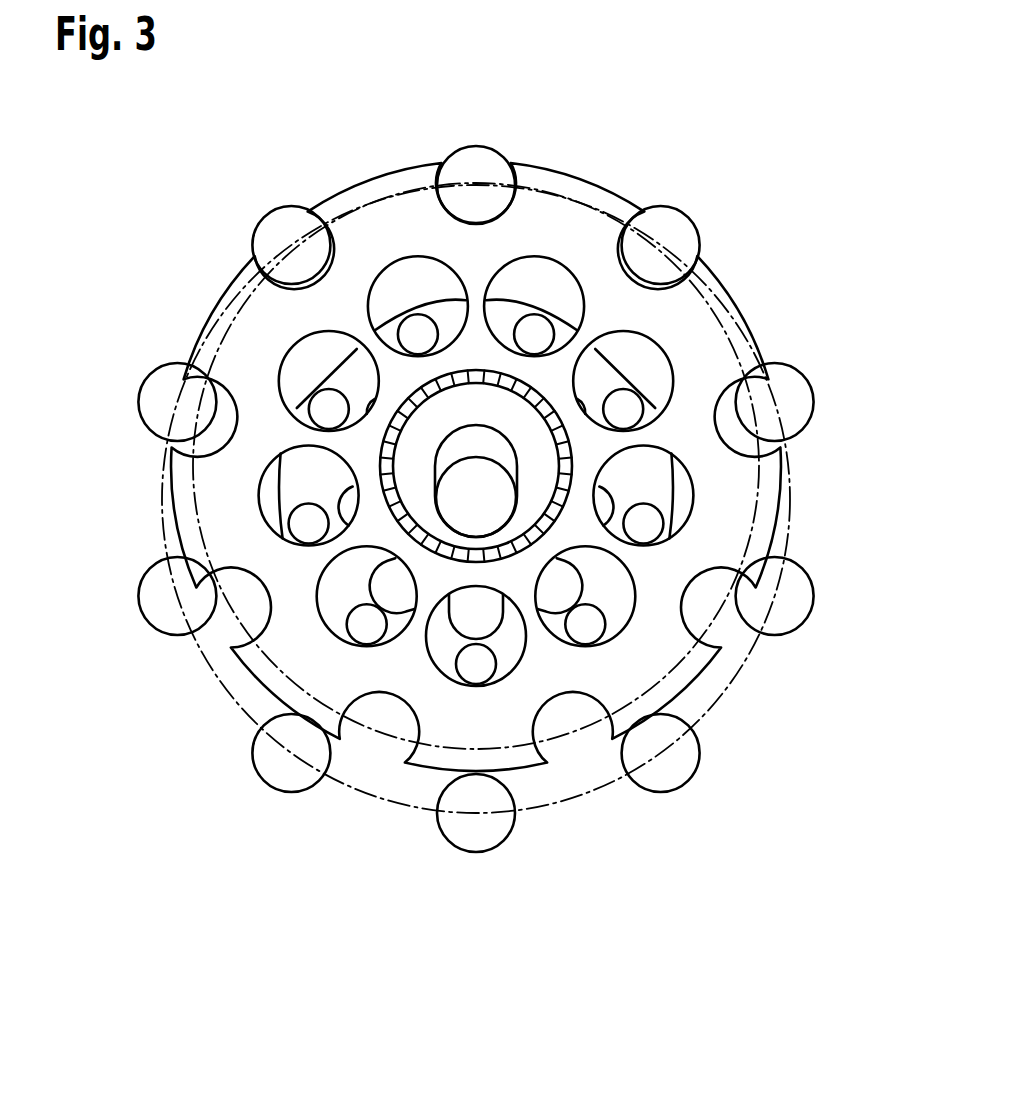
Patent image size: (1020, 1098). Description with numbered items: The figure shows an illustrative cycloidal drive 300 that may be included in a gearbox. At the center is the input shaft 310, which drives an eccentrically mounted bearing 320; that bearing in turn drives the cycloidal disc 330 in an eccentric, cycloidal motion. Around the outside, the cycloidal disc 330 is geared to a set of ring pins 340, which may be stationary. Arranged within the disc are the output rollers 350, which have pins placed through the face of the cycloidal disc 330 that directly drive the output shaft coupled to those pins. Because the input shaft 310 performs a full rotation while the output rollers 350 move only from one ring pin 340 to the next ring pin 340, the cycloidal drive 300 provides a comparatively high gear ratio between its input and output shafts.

The cycloidal drive 300 is at (796, 159).
The input shaft 310 is at (481, 447).
The eccentrically mounted bearing 320 is at (420, 461).
The cycloidal disc 330 is at (698, 323).
The ring pins 340 is at (792, 396).
The output rollers 350 is at (347, 372).